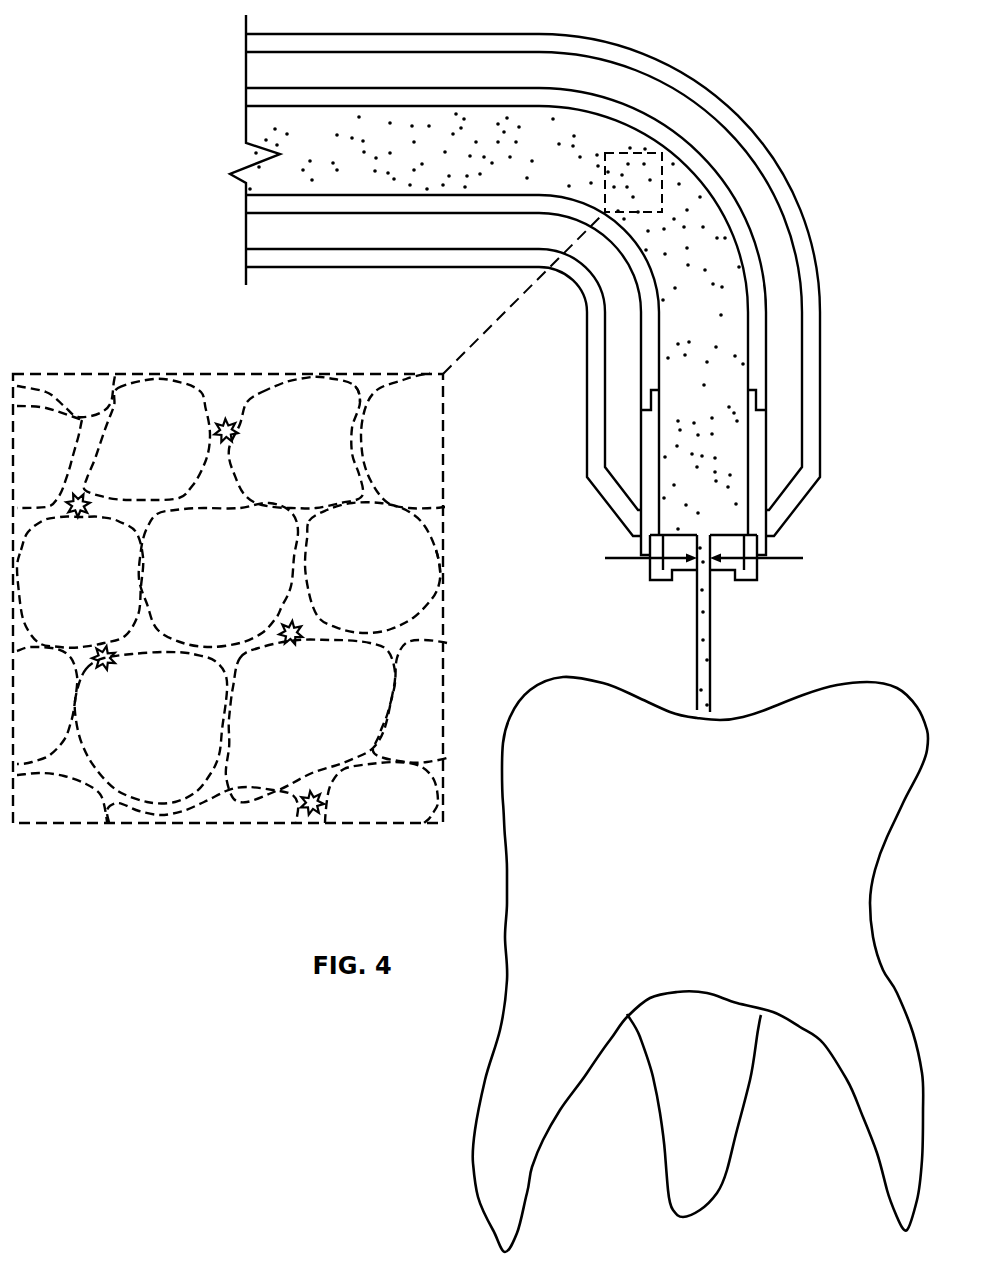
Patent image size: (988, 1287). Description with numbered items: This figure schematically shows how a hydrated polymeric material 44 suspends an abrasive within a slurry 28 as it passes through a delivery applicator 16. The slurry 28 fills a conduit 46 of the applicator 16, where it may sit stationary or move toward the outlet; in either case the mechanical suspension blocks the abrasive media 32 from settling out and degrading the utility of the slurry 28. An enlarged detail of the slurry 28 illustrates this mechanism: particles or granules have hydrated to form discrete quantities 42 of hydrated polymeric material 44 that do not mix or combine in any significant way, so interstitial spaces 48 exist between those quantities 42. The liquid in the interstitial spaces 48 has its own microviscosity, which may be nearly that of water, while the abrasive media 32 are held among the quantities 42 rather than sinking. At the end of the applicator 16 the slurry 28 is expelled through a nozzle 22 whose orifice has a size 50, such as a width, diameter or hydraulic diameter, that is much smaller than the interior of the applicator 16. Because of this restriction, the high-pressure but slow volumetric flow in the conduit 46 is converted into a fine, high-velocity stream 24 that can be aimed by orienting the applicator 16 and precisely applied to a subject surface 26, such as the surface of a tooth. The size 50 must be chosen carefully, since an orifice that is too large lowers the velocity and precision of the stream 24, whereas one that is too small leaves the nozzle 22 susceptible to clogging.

The applicator 16 is at (722, 76).
The slurry 28 is at (709, 197).
The conduit 46 is at (743, 248).
The hydrated polymeric material 44 is at (365, 377).
The interstitial spaces 48 is at (417, 621).
The quantities of hydrated polymeric material 42 is at (397, 808).
The abrasive media 32 is at (195, 569).
The nozzle 22 is at (690, 567).
The size of an orifice 50 is at (778, 562).
The stream 24 is at (705, 618).
The subject surface 26 is at (679, 692).